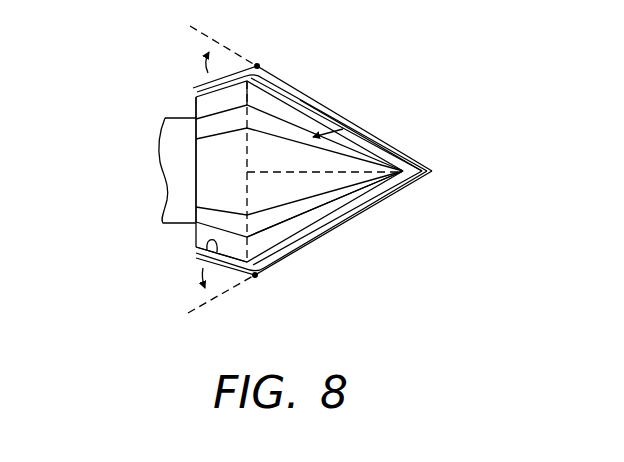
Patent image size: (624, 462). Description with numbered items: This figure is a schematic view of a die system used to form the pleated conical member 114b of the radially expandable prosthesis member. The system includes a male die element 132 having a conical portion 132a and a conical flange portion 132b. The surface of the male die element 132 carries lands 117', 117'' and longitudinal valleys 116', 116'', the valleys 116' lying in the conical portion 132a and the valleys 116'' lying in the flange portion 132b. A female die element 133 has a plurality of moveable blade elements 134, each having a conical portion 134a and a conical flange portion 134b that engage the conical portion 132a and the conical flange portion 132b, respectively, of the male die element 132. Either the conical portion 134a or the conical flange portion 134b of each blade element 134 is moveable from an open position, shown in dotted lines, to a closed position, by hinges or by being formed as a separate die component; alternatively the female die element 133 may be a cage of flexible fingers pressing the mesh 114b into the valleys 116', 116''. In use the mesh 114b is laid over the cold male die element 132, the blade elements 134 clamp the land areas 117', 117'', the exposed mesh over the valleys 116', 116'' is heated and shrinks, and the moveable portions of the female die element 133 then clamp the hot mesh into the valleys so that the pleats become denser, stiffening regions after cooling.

The male die element 132 is at (203, 159).
The conical portion 132a is at (337, 214).
The conical flange portion 132b is at (196, 250).
The female die element 133 is at (390, 205).
The blade element 134 is at (316, 90).
The conical portion 134a is at (359, 125).
The conical flange portion 134b is at (229, 68).
The conical member 114b is at (325, 112).
The longitudinal valleys 116' is at (380, 125).
The valleys 116'' is at (156, 118).
The land areas 117' is at (282, 70).
The land areas 117'' is at (147, 183).